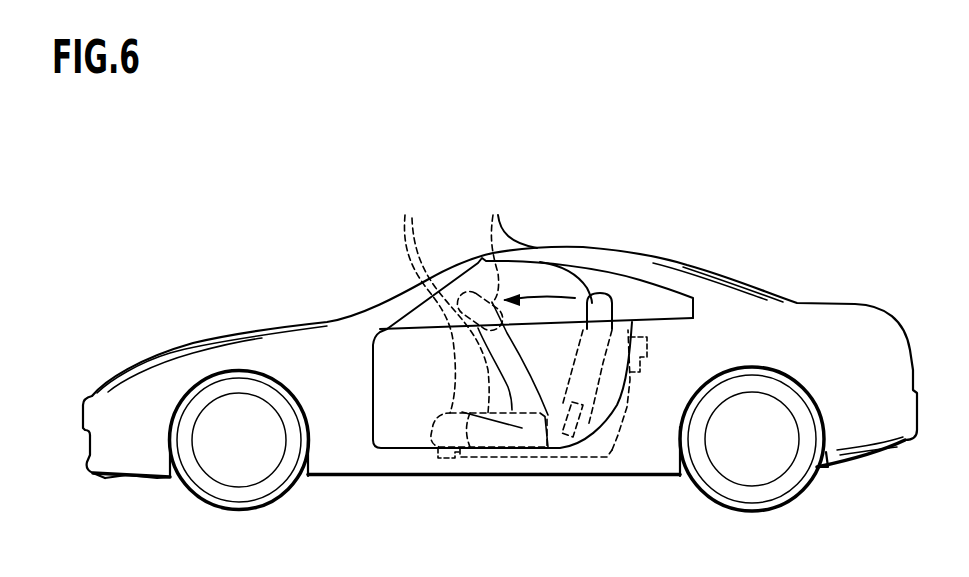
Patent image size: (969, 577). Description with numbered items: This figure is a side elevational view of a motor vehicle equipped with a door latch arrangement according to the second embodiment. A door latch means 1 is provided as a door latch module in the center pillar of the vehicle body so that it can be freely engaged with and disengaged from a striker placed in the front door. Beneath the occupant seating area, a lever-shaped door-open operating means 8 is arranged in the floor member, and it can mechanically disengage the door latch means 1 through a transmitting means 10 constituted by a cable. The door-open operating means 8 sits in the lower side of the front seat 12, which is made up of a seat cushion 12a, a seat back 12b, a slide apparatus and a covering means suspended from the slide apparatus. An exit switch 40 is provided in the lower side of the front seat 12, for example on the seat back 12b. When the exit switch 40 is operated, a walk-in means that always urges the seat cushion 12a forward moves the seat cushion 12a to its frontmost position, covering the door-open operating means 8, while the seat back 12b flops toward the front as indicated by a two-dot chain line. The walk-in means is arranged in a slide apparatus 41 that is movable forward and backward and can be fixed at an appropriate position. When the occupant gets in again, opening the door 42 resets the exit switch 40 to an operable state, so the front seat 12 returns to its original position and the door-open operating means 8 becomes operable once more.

The door latch means 1 is at (647, 358).
The door-open operating means 8 is at (453, 465).
The transmitting means 10 is at (563, 450).
The front seat 12 is at (459, 271).
The seat cushion 12a is at (438, 295).
The seat back 12b is at (507, 240).
The exit switch 40 is at (596, 430).
The slide apparatus 41 is at (510, 448).
The door 42 is at (387, 412).